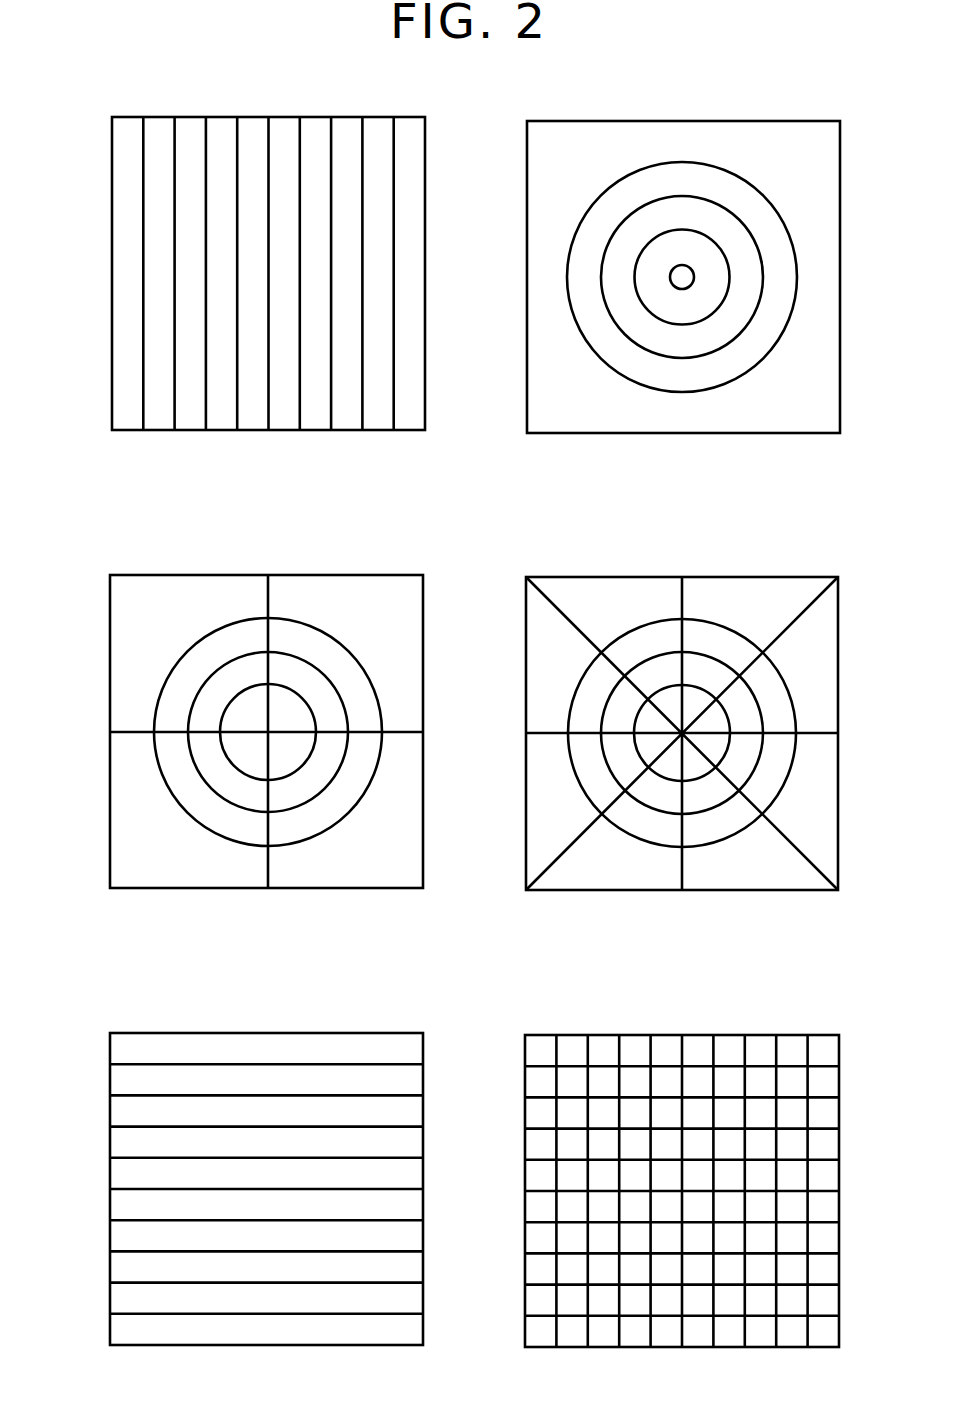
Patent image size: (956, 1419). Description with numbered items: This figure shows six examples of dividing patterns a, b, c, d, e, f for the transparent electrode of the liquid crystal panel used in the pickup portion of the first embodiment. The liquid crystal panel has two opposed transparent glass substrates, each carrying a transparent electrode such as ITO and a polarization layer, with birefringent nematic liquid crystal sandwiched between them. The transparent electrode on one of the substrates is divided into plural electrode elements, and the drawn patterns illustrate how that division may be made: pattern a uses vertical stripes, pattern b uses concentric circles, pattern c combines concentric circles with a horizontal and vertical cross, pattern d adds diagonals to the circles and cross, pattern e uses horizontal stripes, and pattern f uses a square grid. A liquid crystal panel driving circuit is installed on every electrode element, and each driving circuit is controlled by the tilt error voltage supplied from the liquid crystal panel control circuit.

The dividing pattern a is at (112, 193).
The dividing pattern b is at (840, 198).
The dividing pattern c is at (110, 650).
The dividing pattern d is at (838, 655).
The dividing pattern e is at (110, 1108).
The dividing pattern f is at (840, 1114).